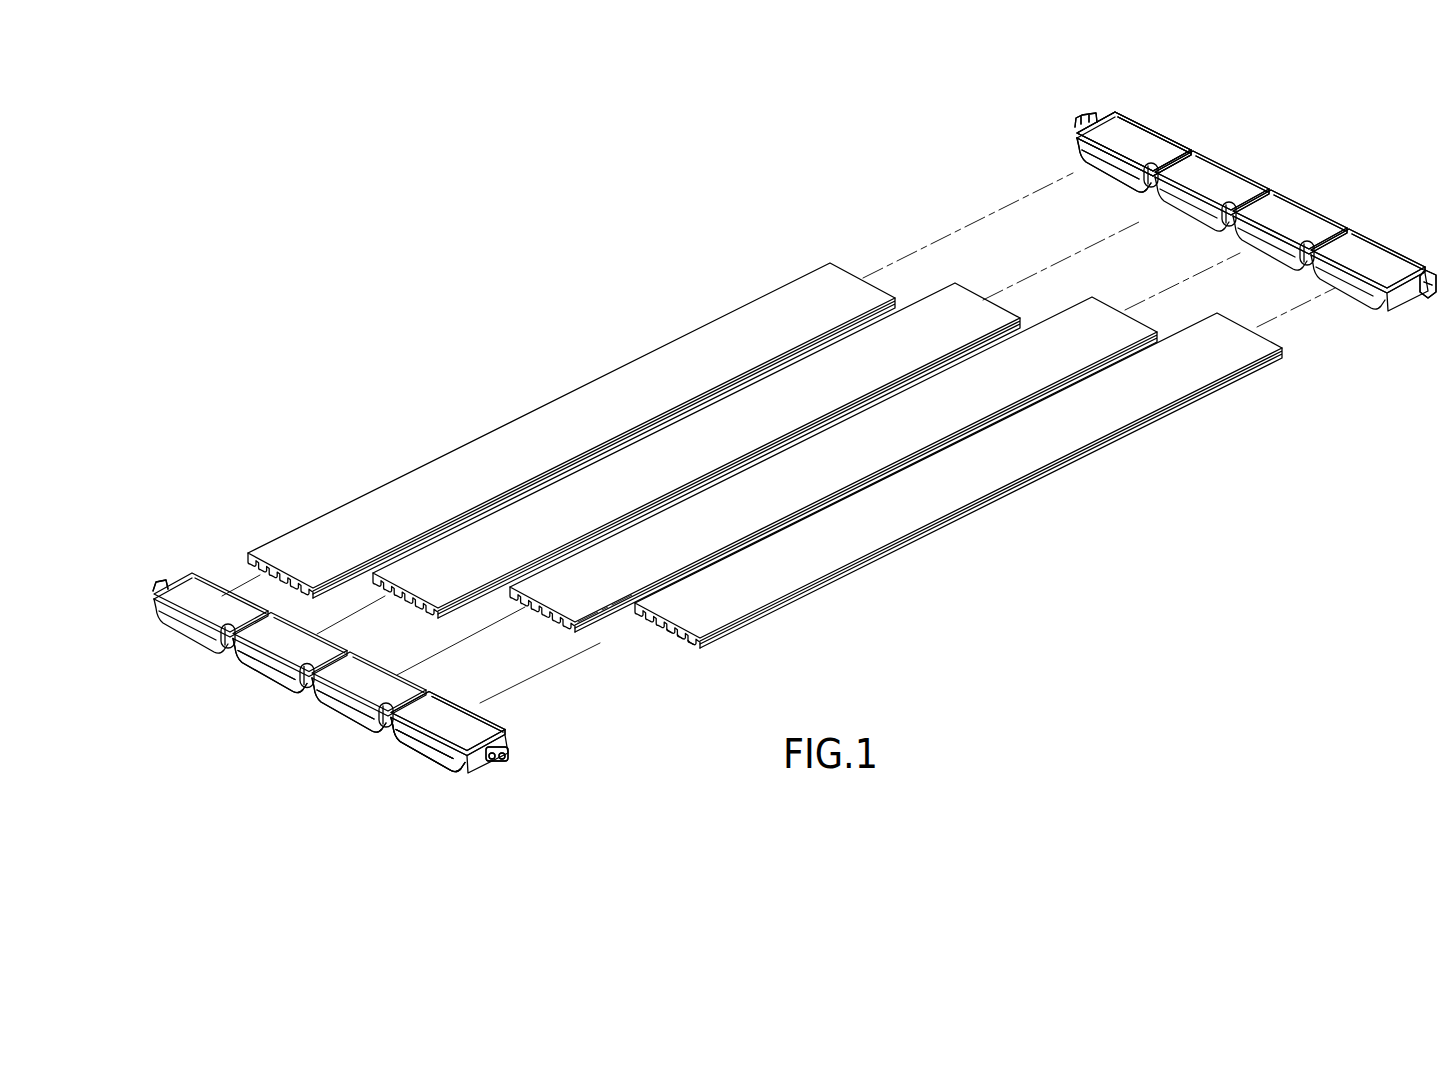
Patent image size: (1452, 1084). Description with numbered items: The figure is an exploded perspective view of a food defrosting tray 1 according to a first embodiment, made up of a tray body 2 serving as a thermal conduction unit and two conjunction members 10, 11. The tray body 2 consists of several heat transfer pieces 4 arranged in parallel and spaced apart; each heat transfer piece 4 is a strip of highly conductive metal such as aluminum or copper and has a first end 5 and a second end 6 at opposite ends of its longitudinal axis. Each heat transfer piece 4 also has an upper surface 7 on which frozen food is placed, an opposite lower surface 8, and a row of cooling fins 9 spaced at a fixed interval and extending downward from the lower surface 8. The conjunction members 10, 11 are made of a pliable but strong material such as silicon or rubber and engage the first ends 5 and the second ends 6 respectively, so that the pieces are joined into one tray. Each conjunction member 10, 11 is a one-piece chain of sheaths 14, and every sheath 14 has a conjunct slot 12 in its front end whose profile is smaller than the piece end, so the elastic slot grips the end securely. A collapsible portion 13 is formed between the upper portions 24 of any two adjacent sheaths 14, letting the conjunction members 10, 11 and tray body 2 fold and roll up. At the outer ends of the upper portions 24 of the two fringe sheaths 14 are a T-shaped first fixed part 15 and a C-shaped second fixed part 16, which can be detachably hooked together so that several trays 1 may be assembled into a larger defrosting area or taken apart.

The food defrosting tray 1 is at (366, 193).
The tray body 2 is at (637, 348).
The heat transfer piece 4 is at (612, 482).
The first end 5 is at (677, 645).
The second end 6 is at (1263, 335).
The upper surface 7 is at (865, 527).
The lower surface 8 is at (693, 650).
The cooling fins 9 is at (666, 642).
The conjunction member 10 is at (247, 680).
The conjunction member 11 is at (1143, 113).
The conjunct slot 12 is at (1082, 162).
The collapsible portion 13 is at (425, 700).
The sheath 14 is at (413, 740).
The first fixed part 15 is at (160, 585).
The second fixed part 16 is at (512, 751).
The upper portion 24 is at (471, 727).